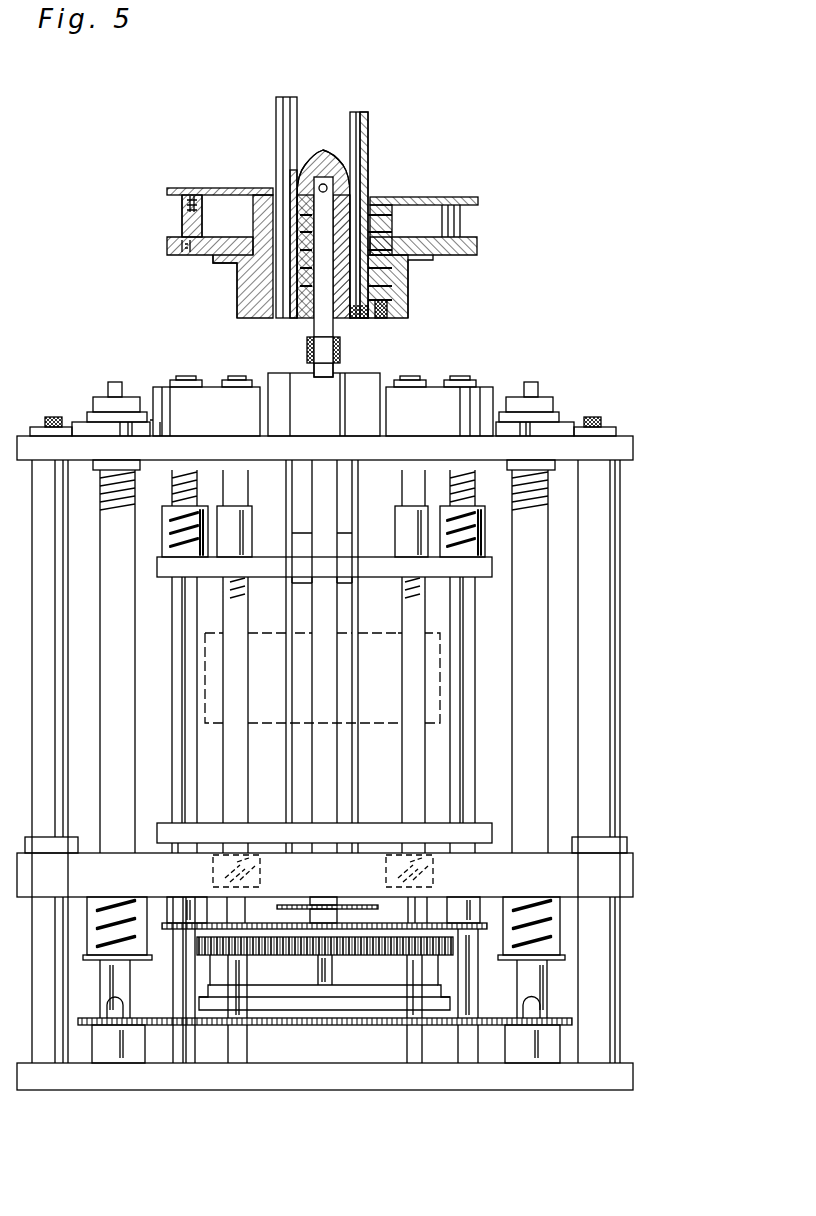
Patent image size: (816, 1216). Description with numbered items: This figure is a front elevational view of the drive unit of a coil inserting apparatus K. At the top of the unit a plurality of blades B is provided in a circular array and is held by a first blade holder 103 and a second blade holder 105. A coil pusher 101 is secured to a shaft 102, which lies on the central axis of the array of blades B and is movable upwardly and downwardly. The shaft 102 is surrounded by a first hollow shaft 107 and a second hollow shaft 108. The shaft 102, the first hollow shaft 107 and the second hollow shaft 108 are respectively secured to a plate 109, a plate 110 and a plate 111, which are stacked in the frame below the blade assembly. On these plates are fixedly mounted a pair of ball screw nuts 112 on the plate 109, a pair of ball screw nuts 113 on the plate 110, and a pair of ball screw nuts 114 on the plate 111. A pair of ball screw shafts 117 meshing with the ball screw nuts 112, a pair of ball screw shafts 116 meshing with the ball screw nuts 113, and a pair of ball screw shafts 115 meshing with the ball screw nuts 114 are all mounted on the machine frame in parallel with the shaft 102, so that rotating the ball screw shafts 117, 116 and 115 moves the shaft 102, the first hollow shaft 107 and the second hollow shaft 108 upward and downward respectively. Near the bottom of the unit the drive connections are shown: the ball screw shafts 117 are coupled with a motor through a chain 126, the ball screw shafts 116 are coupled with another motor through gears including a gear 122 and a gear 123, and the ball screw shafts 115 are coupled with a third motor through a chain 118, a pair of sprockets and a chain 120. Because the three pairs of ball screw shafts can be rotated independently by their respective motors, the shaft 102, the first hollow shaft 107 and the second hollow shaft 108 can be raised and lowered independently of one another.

The blades B is at (296, 100).
The coil pusher 101 is at (327, 158).
The first blade holder 103 is at (353, 200).
The second blade holder 105 is at (290, 282).
The shaft 102 is at (320, 300).
The first hollow shaft 107 is at (335, 338).
The second hollow shaft 108 is at (318, 369).
The coil inserting apparatus K is at (532, 308).
The ball screw shafts 115 is at (549, 476).
The ball screw nuts 114 is at (472, 524).
The ball screw shafts 117 is at (535, 556).
The plate 111 is at (478, 568).
The ball screw shafts 116 is at (415, 610).
The plate 110 is at (478, 835).
The ball screw nuts 113 is at (440, 880).
The plate 109 is at (622, 871).
The chain 118 is at (487, 926).
The ball screw nuts 112 is at (552, 932).
The gear 123 is at (437, 948).
The chain 126 is at (573, 1020).
The chain 120 is at (290, 909).
The gear 122 is at (318, 948).